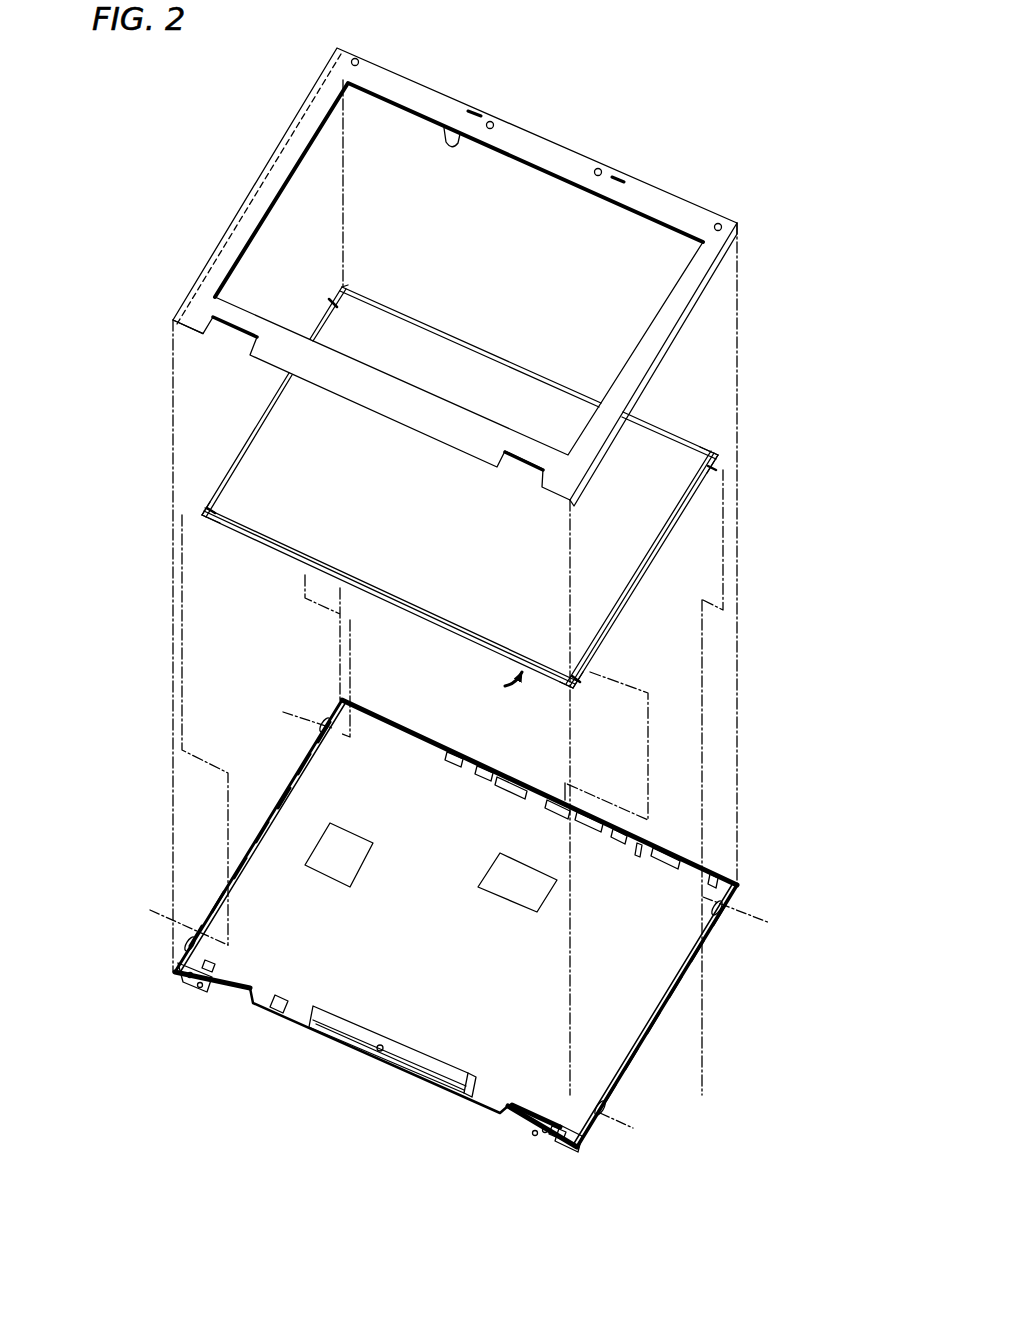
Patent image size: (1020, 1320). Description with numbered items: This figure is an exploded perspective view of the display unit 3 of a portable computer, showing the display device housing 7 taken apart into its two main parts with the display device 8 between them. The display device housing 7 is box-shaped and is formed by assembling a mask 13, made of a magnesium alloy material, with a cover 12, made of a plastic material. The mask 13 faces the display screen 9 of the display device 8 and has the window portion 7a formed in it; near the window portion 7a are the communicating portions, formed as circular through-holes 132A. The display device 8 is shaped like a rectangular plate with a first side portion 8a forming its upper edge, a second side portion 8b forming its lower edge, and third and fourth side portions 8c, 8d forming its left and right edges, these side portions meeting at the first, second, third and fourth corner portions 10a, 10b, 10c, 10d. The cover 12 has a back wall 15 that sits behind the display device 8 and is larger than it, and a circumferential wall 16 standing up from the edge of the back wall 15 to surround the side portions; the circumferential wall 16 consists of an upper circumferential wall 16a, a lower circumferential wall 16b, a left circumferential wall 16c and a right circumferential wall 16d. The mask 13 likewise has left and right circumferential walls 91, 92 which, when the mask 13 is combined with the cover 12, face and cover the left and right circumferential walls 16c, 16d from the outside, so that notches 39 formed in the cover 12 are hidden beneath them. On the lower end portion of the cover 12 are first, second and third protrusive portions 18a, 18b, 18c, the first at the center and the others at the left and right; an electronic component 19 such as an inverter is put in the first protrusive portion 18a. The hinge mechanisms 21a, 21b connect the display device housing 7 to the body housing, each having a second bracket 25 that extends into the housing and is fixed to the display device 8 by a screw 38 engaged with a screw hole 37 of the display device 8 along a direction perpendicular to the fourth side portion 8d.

The display unit 3 is at (220, 158).
The display device housing 7 is at (475, 269).
The window portion 7a is at (458, 140).
The display device 8 is at (458, 478).
The first side portion 8a is at (453, 333).
The second side portion 8b is at (411, 614).
The third side portion 8c is at (250, 437).
The fourth side portion 8d is at (652, 562).
The display screen 9 is at (415, 502).
The first corner portion 10a is at (720, 456).
The second corner portion 10b is at (343, 288).
The third corner portion 10c is at (200, 513).
The fourth corner portion 10d is at (575, 690).
The cover 12 is at (302, 1013).
The mask 13 is at (207, 295).
The back wall 15 is at (482, 770).
The circumferential wall 16 is at (459, 930).
The upper circumferential wall 16a is at (525, 786).
The lower circumferential wall 16b is at (425, 1081).
The left circumferential wall 16c is at (291, 782).
The right circumferential wall 16d is at (668, 1000).
The first protrusive portion 18a is at (498, 1115).
The second protrusive portion 18b is at (182, 986).
The third protrusive portion 18c is at (572, 1153).
The electronic component 19 is at (345, 1045).
The hinge mechanism 21a is at (205, 963).
The hinge mechanism 21b is at (558, 1124).
The second bracket 25 is at (285, 800).
The screw hole 37 is at (333, 305).
The screw 38 is at (283, 712).
The notches 39 is at (325, 722).
The left circumferential wall 91 is at (286, 126).
The right circumferential wall 92 is at (660, 352).
The through-holes 132A is at (359, 62).